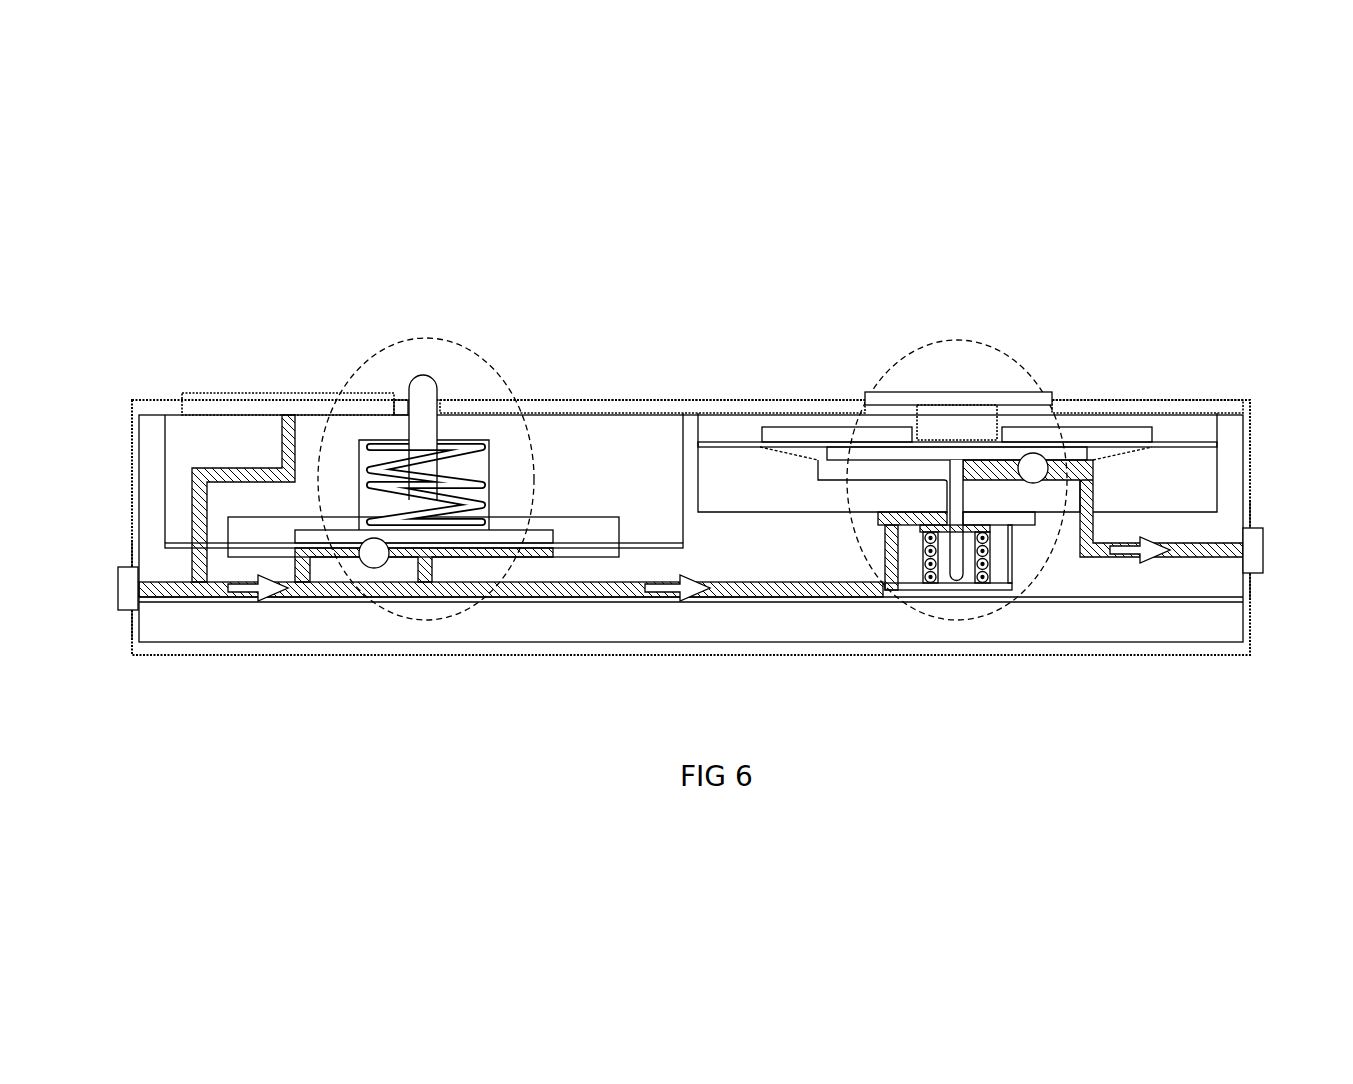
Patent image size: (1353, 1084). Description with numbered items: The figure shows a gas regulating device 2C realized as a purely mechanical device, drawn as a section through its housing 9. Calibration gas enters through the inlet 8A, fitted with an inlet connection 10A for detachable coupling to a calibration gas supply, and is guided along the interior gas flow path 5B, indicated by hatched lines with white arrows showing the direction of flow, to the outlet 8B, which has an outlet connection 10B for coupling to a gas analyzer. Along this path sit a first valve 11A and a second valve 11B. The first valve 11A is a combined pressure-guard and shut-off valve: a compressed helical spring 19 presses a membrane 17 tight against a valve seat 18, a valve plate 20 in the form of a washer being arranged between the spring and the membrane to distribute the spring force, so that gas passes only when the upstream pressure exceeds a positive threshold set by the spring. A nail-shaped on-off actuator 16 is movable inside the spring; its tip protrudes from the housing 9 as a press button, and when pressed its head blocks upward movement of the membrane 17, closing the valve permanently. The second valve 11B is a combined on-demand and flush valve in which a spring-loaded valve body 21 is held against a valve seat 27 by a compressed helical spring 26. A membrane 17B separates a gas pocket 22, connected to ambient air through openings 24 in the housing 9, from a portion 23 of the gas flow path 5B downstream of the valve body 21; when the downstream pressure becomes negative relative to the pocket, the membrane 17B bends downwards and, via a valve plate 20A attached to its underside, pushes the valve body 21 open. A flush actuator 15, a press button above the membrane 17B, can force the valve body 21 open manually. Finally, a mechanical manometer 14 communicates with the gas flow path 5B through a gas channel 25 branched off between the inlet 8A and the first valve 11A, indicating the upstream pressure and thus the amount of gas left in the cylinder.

The gas regulating device 2C is at (138, 285).
The housing 9 is at (818, 655).
The openings 24 is at (862, 398).
The mechanical manometer 14 is at (258, 407).
The gas channel 25 is at (200, 518).
The first valve 11A is at (385, 340).
The membrane 17 is at (592, 546).
The valve plate 20 is at (530, 537).
The valve seat 18 is at (423, 558).
The helical spring 19 is at (462, 447).
The on-off actuator 16 is at (425, 392).
The gas flow path 5B is at (735, 590).
The inlet 8A is at (125, 600).
The inlet connection 10A is at (125, 560).
The second valve 11B is at (906, 342).
The flush actuator 15 is at (962, 392).
The gas pocket 22 is at (770, 432).
The membrane 17B is at (1080, 445).
The valve plate 20A is at (857, 450).
The portion of the gas flow path 23 is at (997, 470).
The valve body 21 is at (957, 520).
The valve seat 27 is at (947, 520).
The helical spring 26 is at (985, 568).
The outlet 8B is at (1240, 555).
The outlet connection 10B is at (1258, 528).